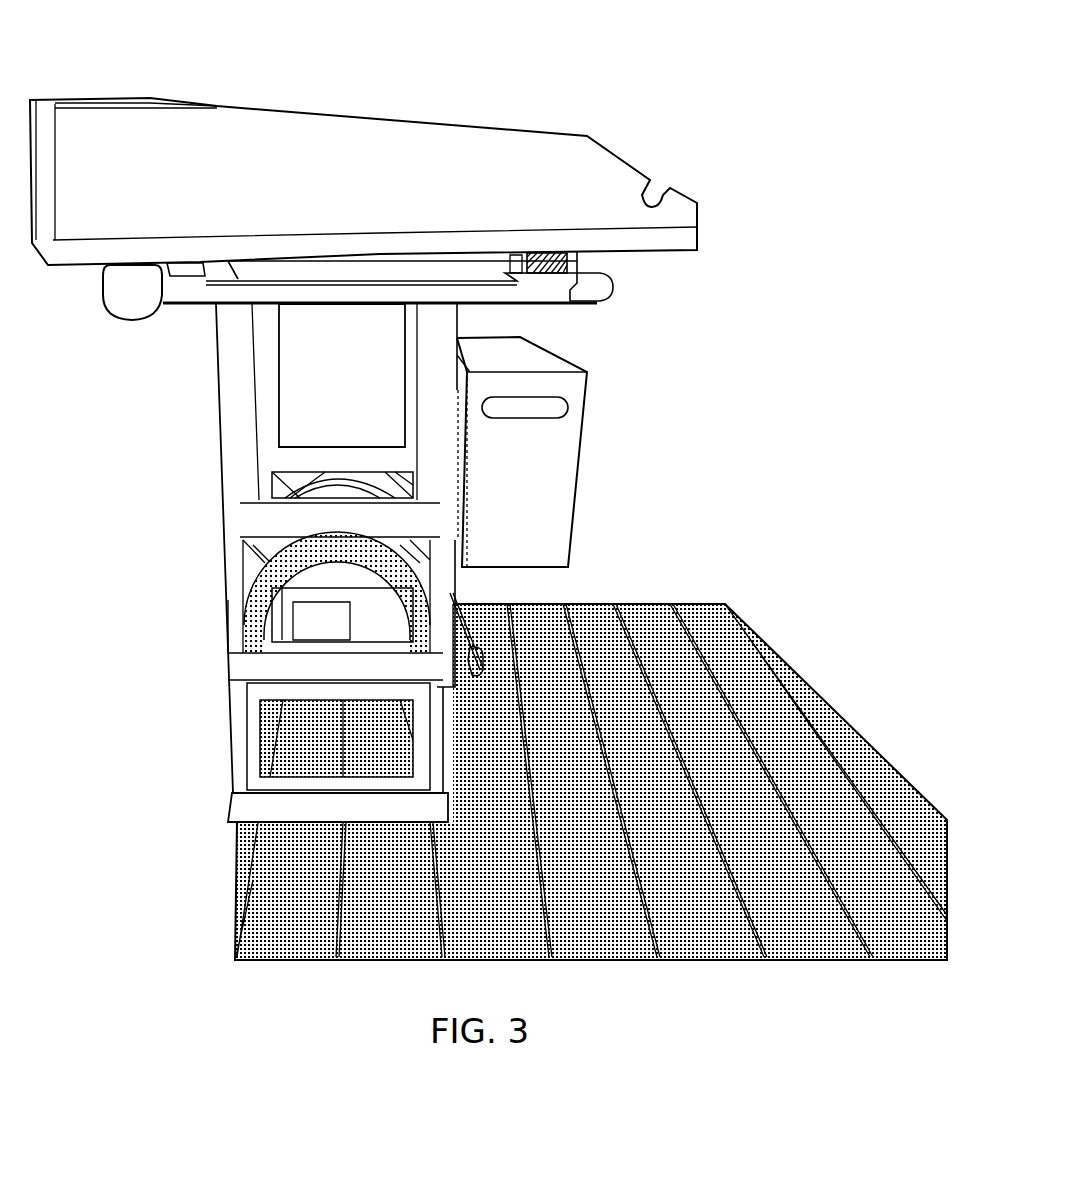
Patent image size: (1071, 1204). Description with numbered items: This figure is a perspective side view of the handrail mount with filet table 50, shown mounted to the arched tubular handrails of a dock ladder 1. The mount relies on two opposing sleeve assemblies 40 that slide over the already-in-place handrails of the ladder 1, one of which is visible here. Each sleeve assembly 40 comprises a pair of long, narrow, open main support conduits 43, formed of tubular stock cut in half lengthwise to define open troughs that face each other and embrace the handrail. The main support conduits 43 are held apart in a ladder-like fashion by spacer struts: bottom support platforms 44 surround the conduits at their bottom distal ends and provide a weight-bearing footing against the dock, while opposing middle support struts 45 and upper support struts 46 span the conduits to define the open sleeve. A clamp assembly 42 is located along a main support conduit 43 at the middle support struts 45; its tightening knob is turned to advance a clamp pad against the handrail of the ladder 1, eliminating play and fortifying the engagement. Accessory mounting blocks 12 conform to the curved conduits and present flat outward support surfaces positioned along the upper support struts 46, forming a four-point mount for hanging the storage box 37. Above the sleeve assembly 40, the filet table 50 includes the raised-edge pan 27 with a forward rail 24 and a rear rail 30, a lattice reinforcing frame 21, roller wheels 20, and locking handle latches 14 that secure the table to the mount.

The filet table 50 is at (405, 98).
The raised-edge pan 27 is at (316, 205).
The roller wheels 20 is at (143, 302).
The rear rail 30 is at (178, 270).
The lattice reinforcing frame 21 is at (647, 252).
The forward rail 24 is at (610, 290).
The locking handle latches 14 is at (590, 302).
The accessory mounting blocks 12 is at (453, 510).
The storage box 37 is at (527, 493).
The dock ladder 1 is at (262, 560).
The upper support struts 46 is at (340, 531).
The main support conduits 43 is at (228, 610).
The sleeve assemblies 40 is at (225, 667).
The middle support struts 45 is at (335, 676).
The bottom support platforms 44 is at (334, 822).
The clamp assembly 42 is at (492, 644).